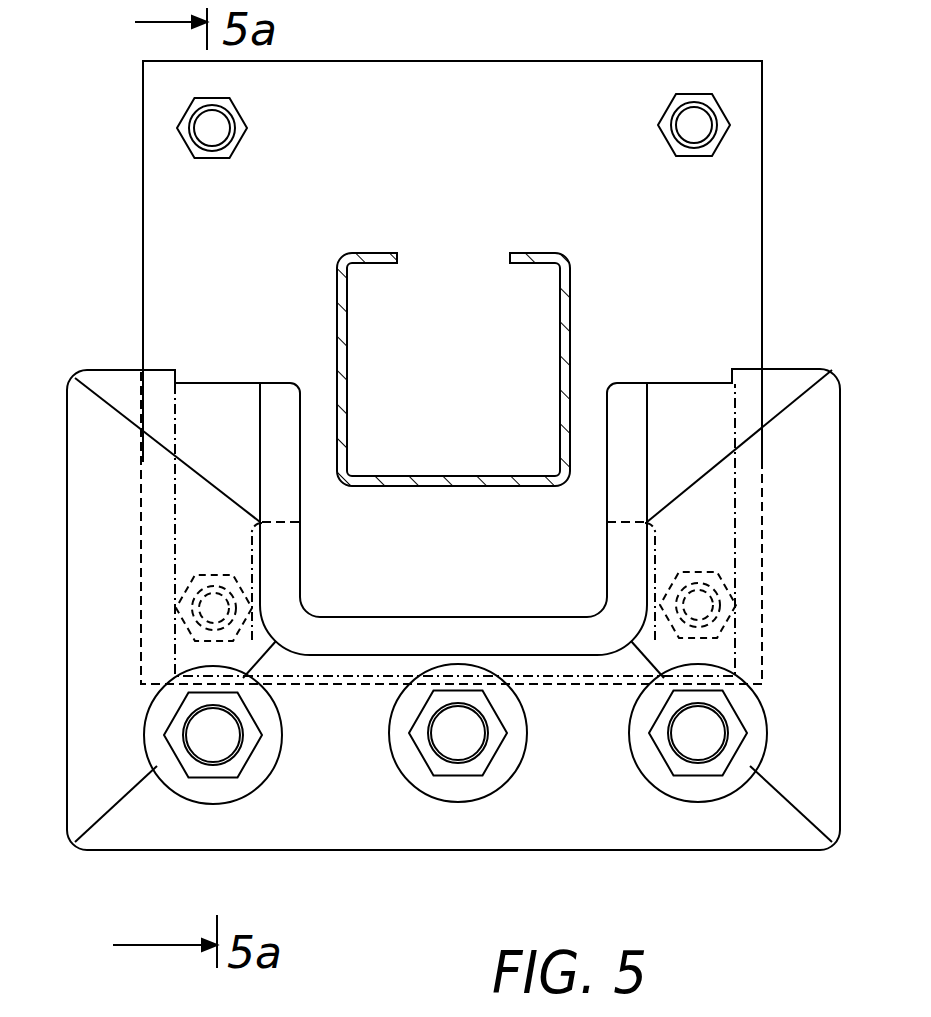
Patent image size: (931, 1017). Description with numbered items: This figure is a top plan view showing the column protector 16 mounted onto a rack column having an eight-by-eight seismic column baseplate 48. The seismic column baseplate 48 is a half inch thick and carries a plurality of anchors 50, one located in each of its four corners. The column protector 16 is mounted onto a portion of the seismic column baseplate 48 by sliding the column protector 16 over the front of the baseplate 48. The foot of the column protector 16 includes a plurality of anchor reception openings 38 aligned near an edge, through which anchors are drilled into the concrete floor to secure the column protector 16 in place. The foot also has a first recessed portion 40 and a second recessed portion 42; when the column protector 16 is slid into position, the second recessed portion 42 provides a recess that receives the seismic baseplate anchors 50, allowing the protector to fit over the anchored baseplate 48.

The column protector 16 is at (846, 705).
The anchor reception openings 38 is at (190, 787).
The first recessed portion 40 is at (748, 392).
The second recessed portion 42 is at (717, 494).
The seismic column baseplate 48 is at (640, 52).
The anchors 50 is at (182, 126).